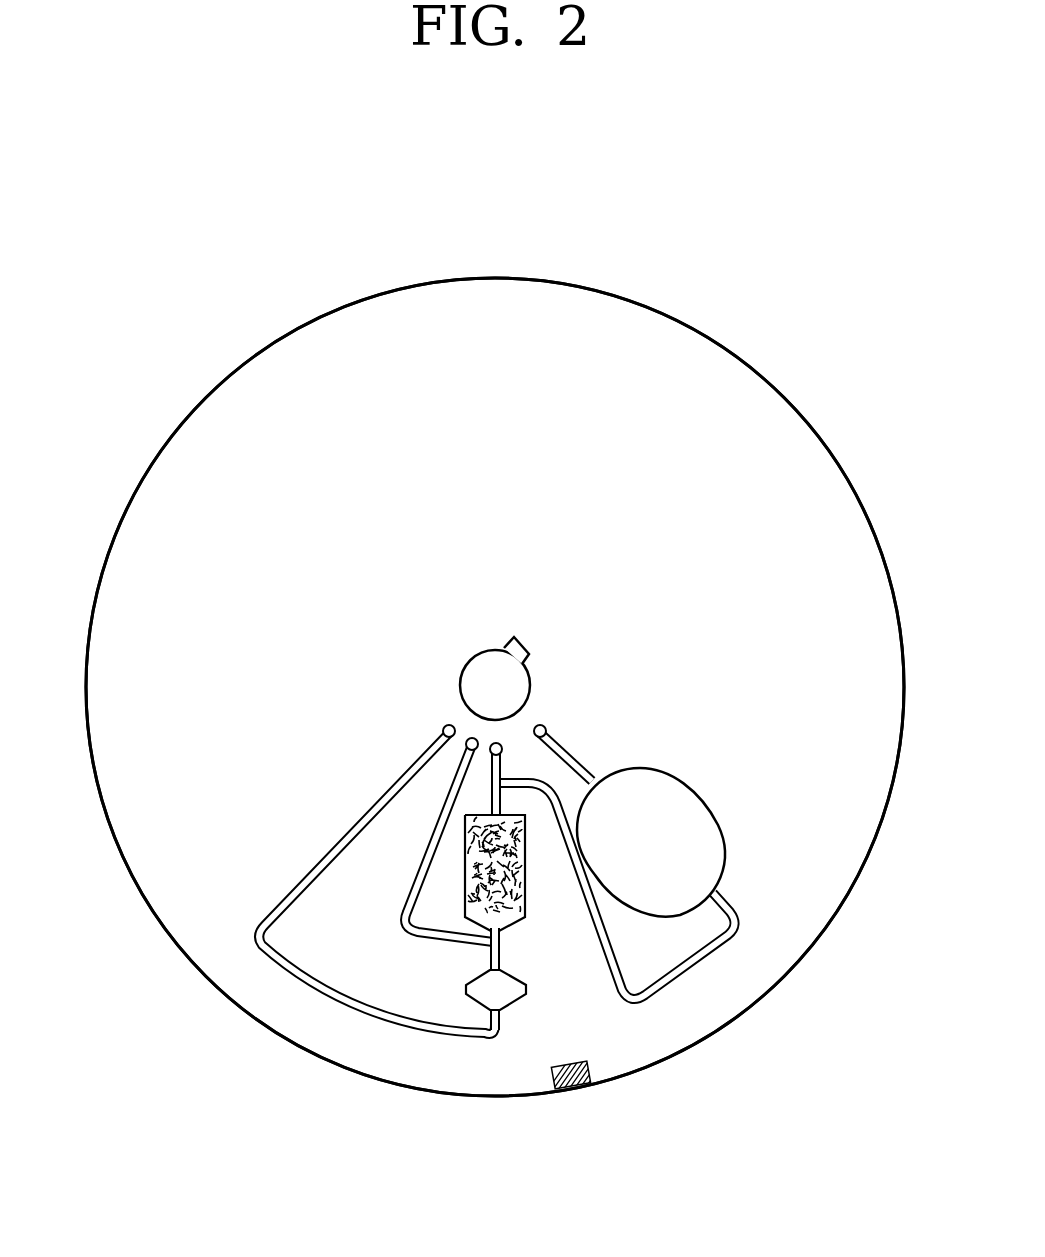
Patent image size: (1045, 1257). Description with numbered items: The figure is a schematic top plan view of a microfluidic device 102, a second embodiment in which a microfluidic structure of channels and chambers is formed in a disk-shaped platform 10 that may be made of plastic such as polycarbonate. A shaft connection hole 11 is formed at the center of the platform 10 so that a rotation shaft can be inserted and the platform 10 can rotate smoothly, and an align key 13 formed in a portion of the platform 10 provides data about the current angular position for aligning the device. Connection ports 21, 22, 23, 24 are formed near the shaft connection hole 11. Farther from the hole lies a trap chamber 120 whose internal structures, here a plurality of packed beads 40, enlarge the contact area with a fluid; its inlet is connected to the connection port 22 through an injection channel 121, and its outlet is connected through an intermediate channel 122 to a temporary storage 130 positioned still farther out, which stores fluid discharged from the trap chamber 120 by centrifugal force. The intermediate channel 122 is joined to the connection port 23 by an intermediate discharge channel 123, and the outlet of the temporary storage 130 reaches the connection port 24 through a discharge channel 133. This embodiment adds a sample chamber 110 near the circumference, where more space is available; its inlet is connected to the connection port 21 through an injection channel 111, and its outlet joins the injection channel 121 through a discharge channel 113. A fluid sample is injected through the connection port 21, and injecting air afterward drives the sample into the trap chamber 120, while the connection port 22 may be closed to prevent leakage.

The microfluidic device 102 is at (158, 347).
The platform 10 is at (857, 862).
The shaft connection hole 11 is at (488, 650).
The align key 13 is at (573, 1087).
The connection port 21 is at (545, 727).
The connection port 22 is at (501, 744).
The connection port 23 is at (467, 738).
The connection port 24 is at (443, 727).
The packed beads 40 is at (463, 865).
The sample chamber 110 is at (690, 807).
The injection channel 111 is at (573, 762).
The discharge channel 113 is at (690, 977).
The trap chamber 120 is at (463, 888).
The injection channel 121 is at (487, 790).
The intermediate channel 122 is at (499, 952).
The intermediate discharge channel 123 is at (420, 853).
The temporary storage 130 is at (513, 998).
The discharge channel 133 is at (288, 883).